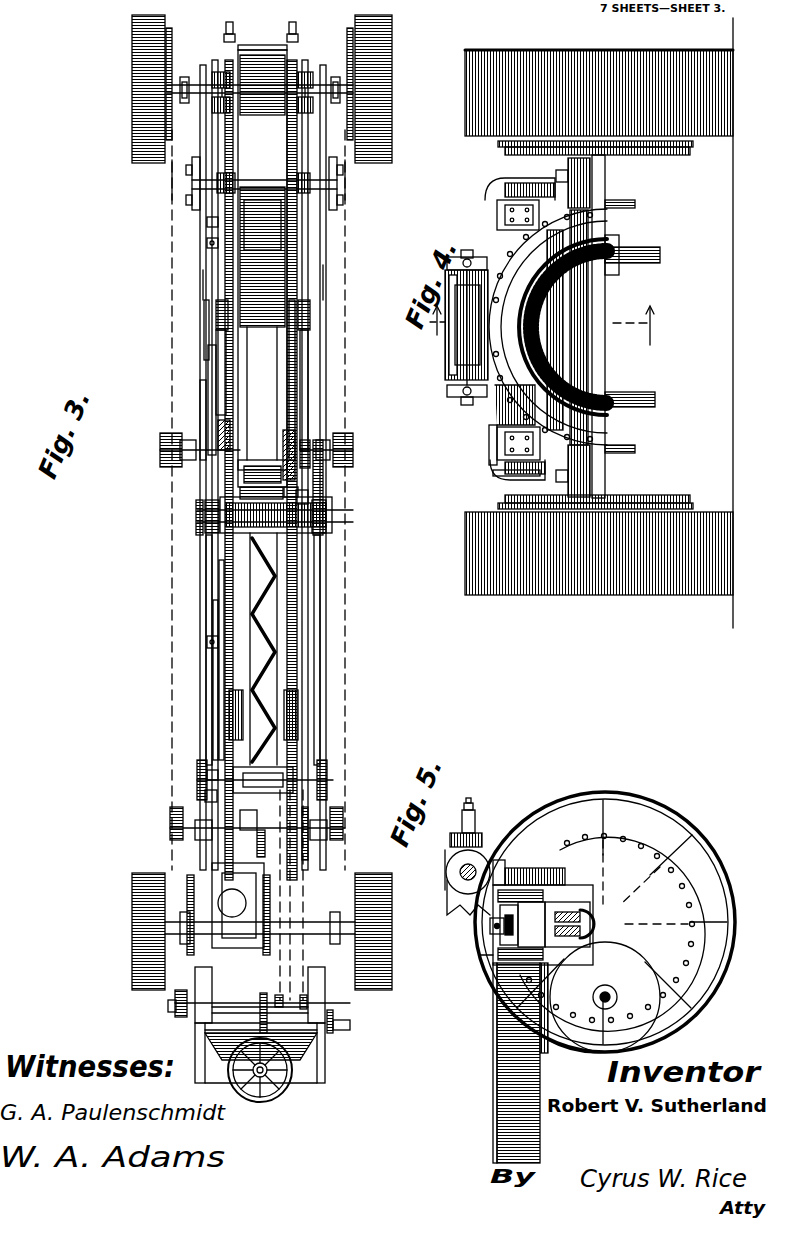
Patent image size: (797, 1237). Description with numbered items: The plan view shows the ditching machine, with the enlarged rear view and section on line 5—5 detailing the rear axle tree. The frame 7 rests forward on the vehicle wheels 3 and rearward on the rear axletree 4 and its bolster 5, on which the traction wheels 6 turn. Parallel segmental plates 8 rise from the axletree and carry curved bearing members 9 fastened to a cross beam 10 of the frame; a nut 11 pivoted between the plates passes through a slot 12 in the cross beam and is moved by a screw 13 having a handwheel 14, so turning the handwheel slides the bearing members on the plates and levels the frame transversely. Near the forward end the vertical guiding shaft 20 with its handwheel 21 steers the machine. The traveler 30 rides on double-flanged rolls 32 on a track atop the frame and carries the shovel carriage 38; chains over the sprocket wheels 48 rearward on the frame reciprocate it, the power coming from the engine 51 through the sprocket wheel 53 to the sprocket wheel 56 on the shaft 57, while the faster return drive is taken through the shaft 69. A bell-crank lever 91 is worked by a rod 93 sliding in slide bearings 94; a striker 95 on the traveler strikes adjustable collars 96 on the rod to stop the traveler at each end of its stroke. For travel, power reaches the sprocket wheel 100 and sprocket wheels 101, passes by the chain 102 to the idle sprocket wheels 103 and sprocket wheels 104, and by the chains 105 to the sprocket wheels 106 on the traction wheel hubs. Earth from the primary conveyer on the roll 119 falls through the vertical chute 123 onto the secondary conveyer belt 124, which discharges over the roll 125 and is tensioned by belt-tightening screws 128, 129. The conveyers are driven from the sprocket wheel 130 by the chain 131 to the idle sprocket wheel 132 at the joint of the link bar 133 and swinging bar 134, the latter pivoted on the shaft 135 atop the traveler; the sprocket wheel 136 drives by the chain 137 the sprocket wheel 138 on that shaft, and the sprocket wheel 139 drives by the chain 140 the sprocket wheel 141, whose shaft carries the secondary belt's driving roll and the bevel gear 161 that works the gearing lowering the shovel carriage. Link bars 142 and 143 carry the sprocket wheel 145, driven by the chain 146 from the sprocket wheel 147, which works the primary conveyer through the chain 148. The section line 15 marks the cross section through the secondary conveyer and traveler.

In FIG. 3, the vehicle wheels 3 is at (132, 926).
In FIG. 5, the vehicle wheels 3 is at (444, 960).
In FIG. 4, the rear axletree 4 is at (603, 350).
In FIG. 4, the bolster 5 is at (557, 325).
In FIG. 3, the traction wheels 6 is at (132, 66).
In FIG. 4, the traction wheels 6 is at (575, 50).
In FIG. 5, the traction wheels 6 is at (590, 791).
In FIG. 3, the frame 7 is at (202, 272).
In FIG. 5, the frame 7 is at (497, 1073).
In FIG. 4, the segmental plates 8 is at (530, 395).
In FIG. 5, the segmental plates 8 is at (500, 866).
In FIG. 3, the curved bearing members 9 is at (220, 72).
In FIG. 5, the curved bearing members 9 is at (490, 890).
In FIG. 4, the cross beam 10 is at (500, 215).
In FIG. 5, the cross beam 10 is at (545, 900).
In FIG. 5, the nut 11 is at (495, 926).
In FIG. 4, the slot 12 is at (512, 325).
In FIG. 5, the slot 12 is at (528, 892).
In FIG. 4, the screw 13 is at (498, 430).
In FIG. 5, the screw 13 is at (556, 900).
In FIG. 4, the handwheel 14 is at (500, 478).
In FIG. 3, the section line 15 is at (222, 116).
In FIG. 3, the vertical guiding shaft 20 is at (282, 1062).
In FIG. 3, the handwheel 21 is at (266, 1076).
In FIG. 3, the traveler 30 is at (205, 600).
In FIG. 3, the double-flanged rolls 32 is at (205, 518).
In FIG. 3, the shovel carriage 38 is at (278, 618).
In FIG. 3, the sprocket wheels 48 is at (236, 190).
In FIG. 4, the sprocket wheels 48 is at (652, 250).
In FIG. 5, the sprocket wheels 48 is at (585, 1052).
In FIG. 3, the engine 51 is at (231, 902).
In FIG. 3, the sprocket wheel 53 is at (188, 882).
In FIG. 3, the sprocket wheel 56 is at (183, 1012).
In FIG. 3, the shaft 57 is at (236, 1003).
In FIG. 3, the shaft 69 is at (260, 996).
In FIG. 3, the bell-crank lever 91 is at (205, 796).
In FIG. 3, the rod 93 is at (210, 652).
In FIG. 3, the slide bearings 94 is at (205, 224).
In FIG. 3, the striker 95 is at (210, 642).
In FIG. 3, the adjustable screw-set collars 96 is at (207, 244).
In FIG. 3, the sprocket wheel 100 is at (308, 850).
In FIG. 3, the sprocket wheels 101 is at (312, 100).
In FIG. 3, the chain 102 is at (225, 700).
In FIG. 3, the idle sprocket wheels 103 is at (178, 472).
In FIG. 3, the sprocket wheels 104 is at (342, 440).
In FIG. 3, the chains 105 is at (160, 182).
In FIG. 3, the sprocket wheels 106 is at (170, 50).
In FIG. 4, the sprocket wheels 106 is at (668, 152).
In FIG. 5, the sprocket wheels 106 is at (640, 848).
In FIG. 4, the roll 119 is at (500, 250).
In FIG. 3, the vertical chute 123 is at (290, 370).
In FIG. 3, the secondary conveyer belt 124 is at (262, 257).
In FIG. 4, the secondary conveyer belt 124 is at (447, 325).
In FIG. 5, the secondary conveyer belt 124 is at (455, 858).
In FIG. 5, the roll 125 is at (480, 832).
In FIG. 3, the belt-tightening screw 128 is at (293, 42).
In FIG. 4, the belt-tightening screw 128 is at (462, 396).
In FIG. 3, the belt-tightening screw 129 is at (227, 42).
In FIG. 4, the belt-tightening screw 129 is at (462, 256).
In FIG. 5, the belt-tightening screw 129 is at (466, 805).
In FIG. 3, the sprocket wheel 130 is at (241, 902).
In FIG. 3, the chain 131 is at (217, 683).
In FIG. 3, the idle sprocket wheel 132 is at (235, 340).
In FIG. 3, the link bar 133 is at (218, 382).
In FIG. 3, the swinging bar 134 is at (213, 355).
In FIG. 3, the shaft 135 is at (258, 462).
In FIG. 3, the sprocket wheel 136 is at (205, 326).
In FIG. 3, the chain 137 is at (225, 440).
In FIG. 3, the sprocket wheel 138 is at (200, 530).
In FIG. 3, the sprocket wheel 139 is at (300, 495).
In FIG. 3, the chain 140 is at (326, 500).
In FIG. 3, the sprocket wheel 141 is at (316, 445).
In FIG. 3, the link bar 142 is at (322, 330).
In FIG. 3, the link bar 143 is at (290, 450).
In FIG. 3, the sprocket wheel 145 is at (262, 240).
In FIG. 3, the chain 146 is at (306, 355).
In FIG. 3, the sprocket wheel 147 is at (265, 488).
In FIG. 3, the chain 148 is at (301, 385).
In FIG. 3, the bevel gear 161 is at (200, 420).